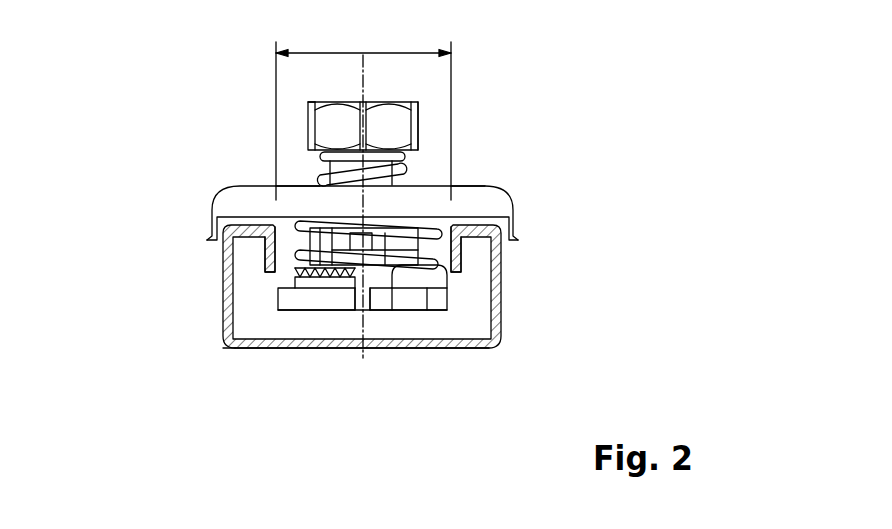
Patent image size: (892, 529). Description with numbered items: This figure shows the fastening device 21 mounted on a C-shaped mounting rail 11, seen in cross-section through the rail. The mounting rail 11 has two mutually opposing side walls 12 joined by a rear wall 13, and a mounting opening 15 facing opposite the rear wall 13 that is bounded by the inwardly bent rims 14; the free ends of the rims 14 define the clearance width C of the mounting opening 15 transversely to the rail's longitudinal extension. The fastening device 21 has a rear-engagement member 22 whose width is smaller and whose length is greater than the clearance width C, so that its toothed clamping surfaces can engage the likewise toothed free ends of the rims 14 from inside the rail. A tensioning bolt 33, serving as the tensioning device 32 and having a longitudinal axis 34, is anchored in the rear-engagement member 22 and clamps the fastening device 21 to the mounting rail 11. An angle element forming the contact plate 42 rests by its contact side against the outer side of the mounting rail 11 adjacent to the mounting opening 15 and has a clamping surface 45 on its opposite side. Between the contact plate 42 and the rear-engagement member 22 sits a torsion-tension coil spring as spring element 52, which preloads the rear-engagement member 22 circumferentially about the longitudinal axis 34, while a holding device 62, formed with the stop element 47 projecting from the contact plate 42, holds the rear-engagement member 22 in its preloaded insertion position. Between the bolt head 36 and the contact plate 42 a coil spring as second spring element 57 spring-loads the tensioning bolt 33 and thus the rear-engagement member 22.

The mounting rail 11 is at (207, 379).
The side wall 12 is at (223, 302).
The rear wall 13 is at (325, 348).
The rim 14 is at (267, 255).
The mounting opening 15 is at (285, 235).
The fastening device 21 is at (507, 136).
The rear-engagement member 22 is at (403, 297).
The tensioning device 32 is at (432, 127).
The tensioning bolt 33 is at (296, 110).
The longitudinal axis 34 is at (365, 81).
The bolt head 36 is at (332, 130).
The contact plate 42 is at (485, 192).
The clamping surface 45 is at (294, 176).
The stop element 47 is at (295, 257).
The spring element 52 is at (396, 312).
The second spring element 57 is at (407, 168).
The holding device 62 is at (333, 259).
The clearance width C is at (363, 108).